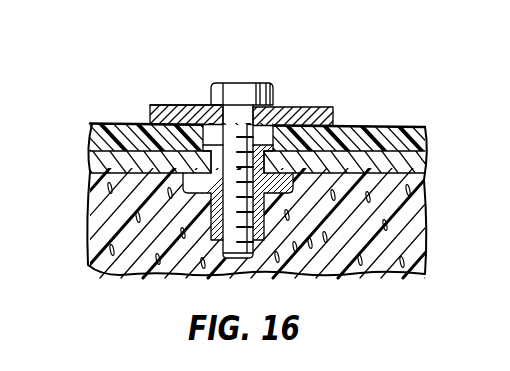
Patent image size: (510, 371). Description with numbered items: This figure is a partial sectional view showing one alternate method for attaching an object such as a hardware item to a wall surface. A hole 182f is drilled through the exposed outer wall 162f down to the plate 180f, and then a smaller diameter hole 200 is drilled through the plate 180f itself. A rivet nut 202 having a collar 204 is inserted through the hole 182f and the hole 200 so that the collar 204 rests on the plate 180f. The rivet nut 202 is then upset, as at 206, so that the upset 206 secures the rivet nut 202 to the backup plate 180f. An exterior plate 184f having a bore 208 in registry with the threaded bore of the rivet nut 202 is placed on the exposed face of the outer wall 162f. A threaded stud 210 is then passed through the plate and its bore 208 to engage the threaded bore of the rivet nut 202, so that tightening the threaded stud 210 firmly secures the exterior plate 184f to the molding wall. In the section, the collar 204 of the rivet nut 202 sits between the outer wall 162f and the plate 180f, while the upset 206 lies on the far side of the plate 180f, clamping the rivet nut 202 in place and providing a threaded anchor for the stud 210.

The exposed outer wall 162f is at (392, 125).
The plate 180f is at (92, 155).
The hole 182f is at (325, 108).
The plate 184f is at (187, 105).
The hole 200 is at (268, 140).
The rivet nut 202 is at (213, 215).
The collar 204 is at (173, 110).
The upset 206 is at (163, 177).
The bore 208 is at (270, 112).
The threaded stud 210 is at (242, 98).